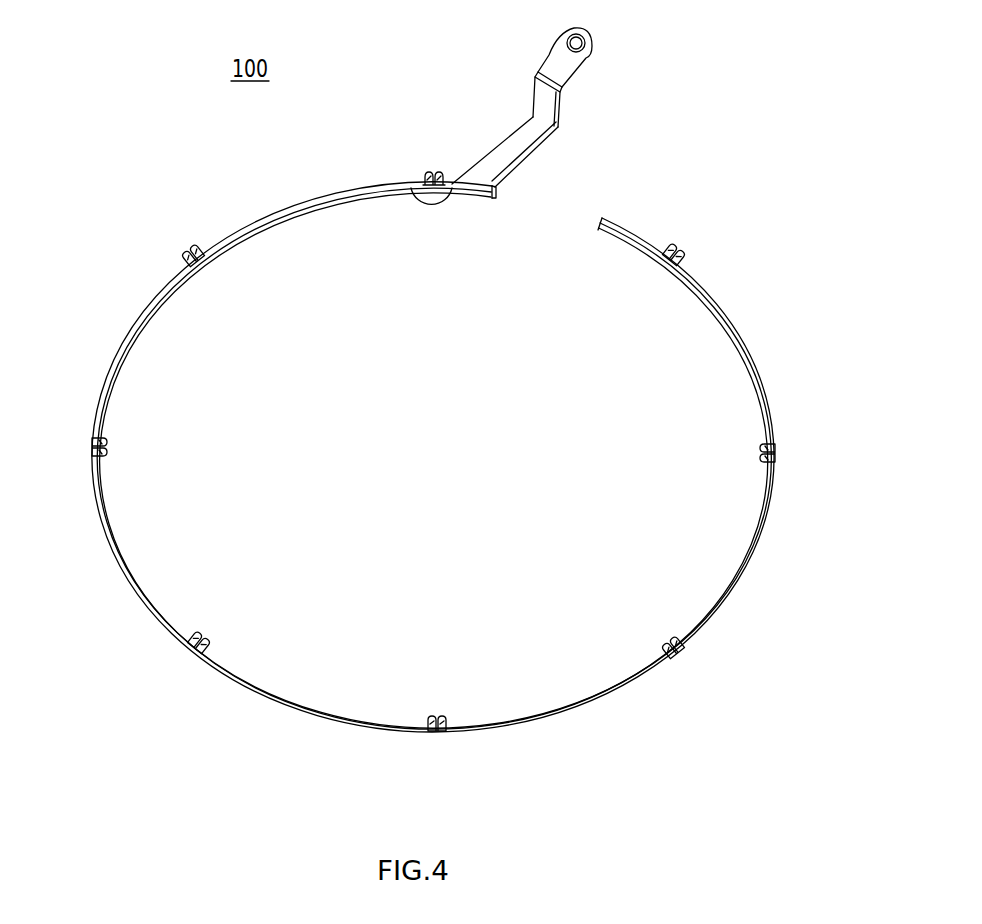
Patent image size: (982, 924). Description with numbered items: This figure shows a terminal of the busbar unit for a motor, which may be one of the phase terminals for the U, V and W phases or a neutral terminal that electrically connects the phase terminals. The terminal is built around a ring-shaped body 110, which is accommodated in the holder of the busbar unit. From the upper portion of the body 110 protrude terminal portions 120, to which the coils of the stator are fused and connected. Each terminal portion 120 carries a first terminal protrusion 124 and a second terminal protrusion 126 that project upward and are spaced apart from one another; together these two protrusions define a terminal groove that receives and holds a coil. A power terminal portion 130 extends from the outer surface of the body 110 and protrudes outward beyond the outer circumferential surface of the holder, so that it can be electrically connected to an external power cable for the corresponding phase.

The body 110 is at (338, 194).
The terminal portion 120 is at (443, 179).
The first terminal protrusion 124 is at (412, 193).
The second terminal protrusion 126 is at (450, 193).
The power terminal portion 130 is at (574, 53).